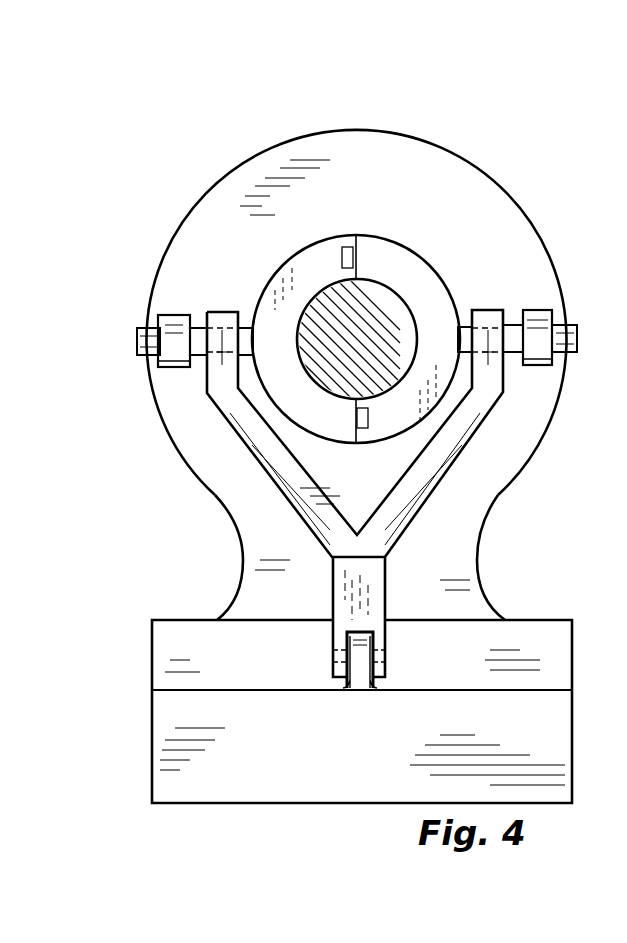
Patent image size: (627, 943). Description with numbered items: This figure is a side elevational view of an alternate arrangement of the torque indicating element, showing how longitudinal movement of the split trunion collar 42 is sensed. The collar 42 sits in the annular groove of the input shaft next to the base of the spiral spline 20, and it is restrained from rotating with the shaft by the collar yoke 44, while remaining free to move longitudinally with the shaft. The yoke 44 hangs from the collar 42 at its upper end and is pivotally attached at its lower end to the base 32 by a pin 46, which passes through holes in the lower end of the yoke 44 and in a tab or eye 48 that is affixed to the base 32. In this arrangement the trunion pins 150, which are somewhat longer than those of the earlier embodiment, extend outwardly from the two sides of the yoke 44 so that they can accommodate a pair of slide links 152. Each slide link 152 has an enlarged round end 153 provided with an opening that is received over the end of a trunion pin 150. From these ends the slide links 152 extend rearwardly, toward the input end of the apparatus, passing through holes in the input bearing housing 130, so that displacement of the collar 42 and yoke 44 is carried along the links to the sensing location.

The spiral spline 20 is at (345, 312).
The base 32 is at (553, 703).
The split trunion collar 42 is at (422, 297).
The collar yoke 44 is at (447, 443).
The pin 46 is at (378, 655).
The tab or eye 48 is at (345, 672).
The input bearing housing 130 is at (487, 234).
The trunion pins 150 is at (137, 340).
The slide links 152 is at (178, 340).
The enlarged round ends 153 is at (175, 365).